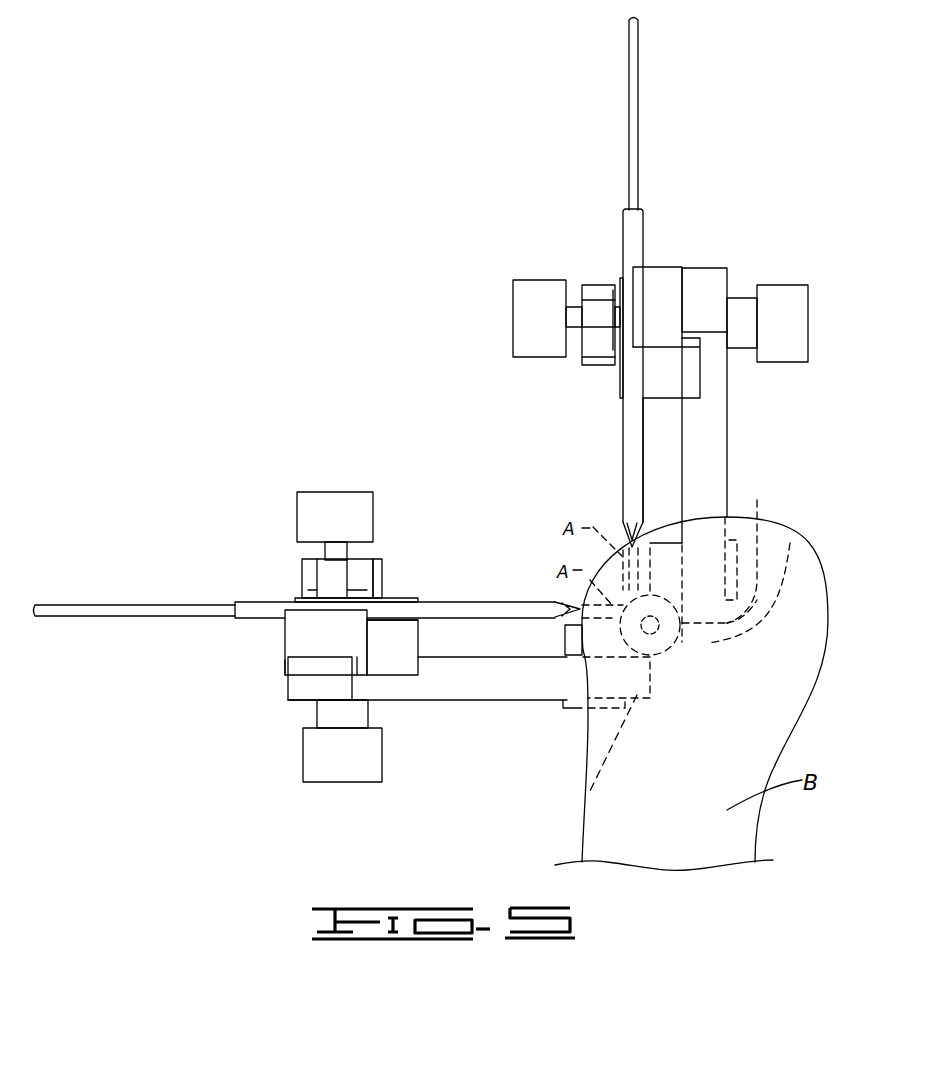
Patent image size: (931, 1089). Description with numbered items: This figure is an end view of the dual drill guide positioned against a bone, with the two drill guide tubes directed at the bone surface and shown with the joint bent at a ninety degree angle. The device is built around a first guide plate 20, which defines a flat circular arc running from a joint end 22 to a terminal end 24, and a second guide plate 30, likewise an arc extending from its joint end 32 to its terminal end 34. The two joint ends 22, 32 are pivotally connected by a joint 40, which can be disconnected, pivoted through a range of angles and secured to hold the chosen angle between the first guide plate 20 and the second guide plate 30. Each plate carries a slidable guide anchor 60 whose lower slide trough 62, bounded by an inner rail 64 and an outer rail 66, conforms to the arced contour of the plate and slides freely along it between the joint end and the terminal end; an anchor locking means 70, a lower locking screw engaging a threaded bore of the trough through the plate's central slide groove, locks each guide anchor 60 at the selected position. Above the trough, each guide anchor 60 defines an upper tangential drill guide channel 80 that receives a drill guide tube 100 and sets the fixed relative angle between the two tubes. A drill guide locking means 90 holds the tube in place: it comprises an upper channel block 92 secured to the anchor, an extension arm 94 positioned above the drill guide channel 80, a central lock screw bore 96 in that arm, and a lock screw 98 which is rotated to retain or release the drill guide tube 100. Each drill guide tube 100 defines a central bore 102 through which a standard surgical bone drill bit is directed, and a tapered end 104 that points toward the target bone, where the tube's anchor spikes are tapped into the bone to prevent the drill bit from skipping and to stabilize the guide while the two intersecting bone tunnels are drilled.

The first guide plate 20 is at (480, 688).
The joint end 22 is at (575, 805).
The terminal end 24 is at (302, 695).
The second guide plate 30 is at (727, 460).
The joint end 32 is at (760, 492).
The terminal end 34 is at (708, 277).
The joint 40 is at (785, 545).
The slidable guide anchor 60 is at (663, 280).
The lower slide trough 62 is at (320, 657).
The inner rail 64 is at (398, 658).
The outer rail 66 is at (285, 668).
The anchor locking means 70 is at (728, 298).
The drill guide channel 80 is at (637, 349).
The drill guide locking means 90 is at (592, 287).
The upper channel block 92 is at (383, 577).
The extension arm 94 is at (327, 578).
The central lock screw bore 96 is at (347, 550).
The lock screw 98 is at (367, 513).
The drill guide tube 100 is at (637, 230).
The central bore 102 is at (235, 605).
The tapered end 104 is at (620, 530).